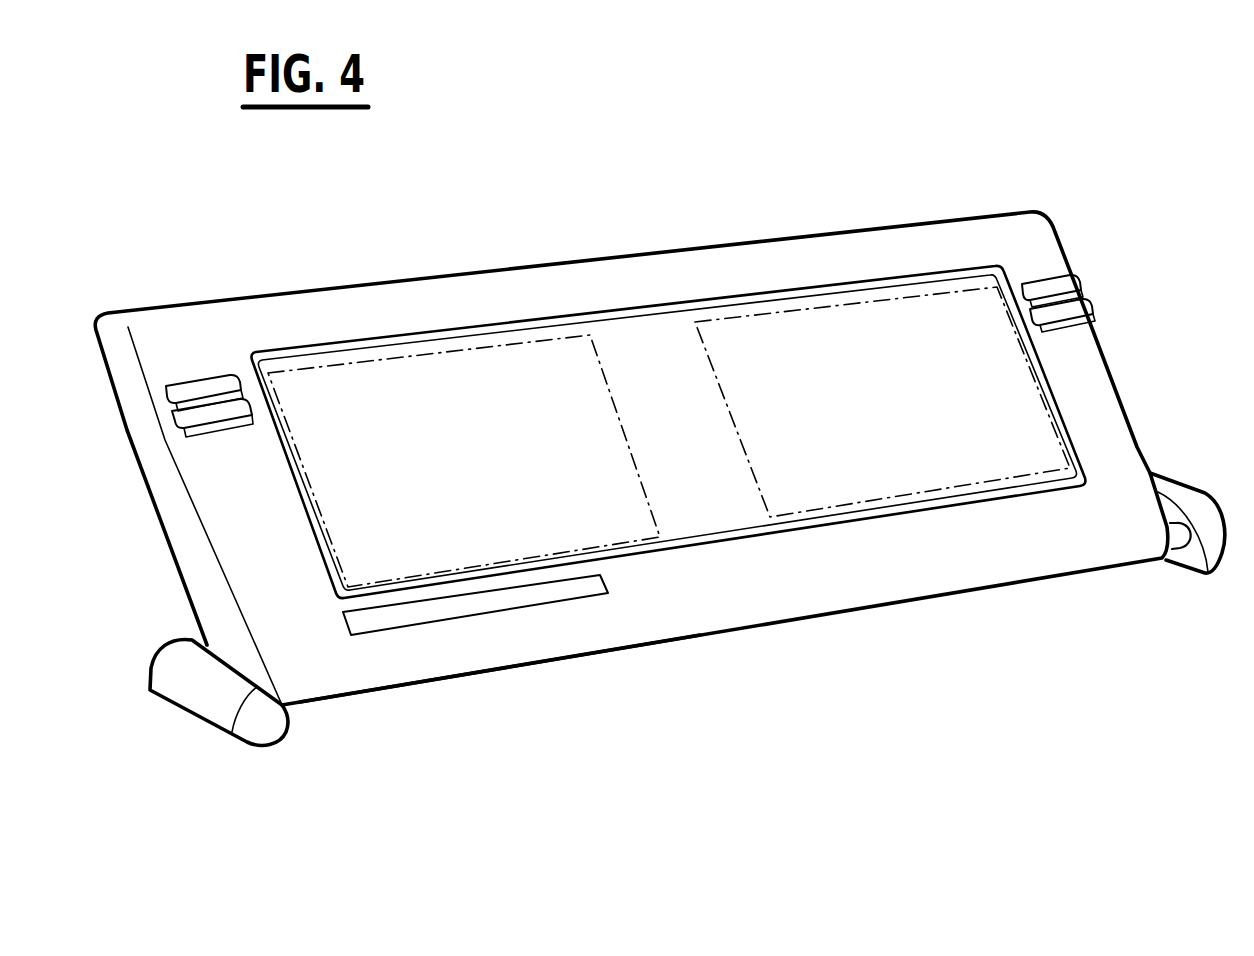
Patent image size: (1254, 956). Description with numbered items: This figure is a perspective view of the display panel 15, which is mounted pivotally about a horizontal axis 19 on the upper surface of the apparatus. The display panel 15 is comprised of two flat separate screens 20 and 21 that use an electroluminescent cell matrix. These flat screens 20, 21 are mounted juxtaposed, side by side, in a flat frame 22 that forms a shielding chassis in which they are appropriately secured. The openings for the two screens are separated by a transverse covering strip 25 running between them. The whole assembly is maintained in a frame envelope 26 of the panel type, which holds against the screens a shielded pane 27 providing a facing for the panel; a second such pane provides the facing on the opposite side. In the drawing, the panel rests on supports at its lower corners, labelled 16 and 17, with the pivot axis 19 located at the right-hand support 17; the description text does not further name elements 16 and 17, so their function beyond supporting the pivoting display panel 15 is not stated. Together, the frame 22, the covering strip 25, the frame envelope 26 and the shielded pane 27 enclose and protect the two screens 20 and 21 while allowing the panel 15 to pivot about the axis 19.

The display panel 15 is at (207, 278).
The left support foot 16 is at (170, 678).
The right support foot / hinge 17 is at (1210, 510).
The horizontal axis 19 is at (1177, 565).
The flat screen 20 is at (440, 382).
The flat screen 21 is at (842, 323).
The flat frame 22 is at (532, 330).
The transverse covering strip 25 is at (673, 337).
The frame envelope 26 is at (511, 675).
The shielded pane 27 is at (818, 493).